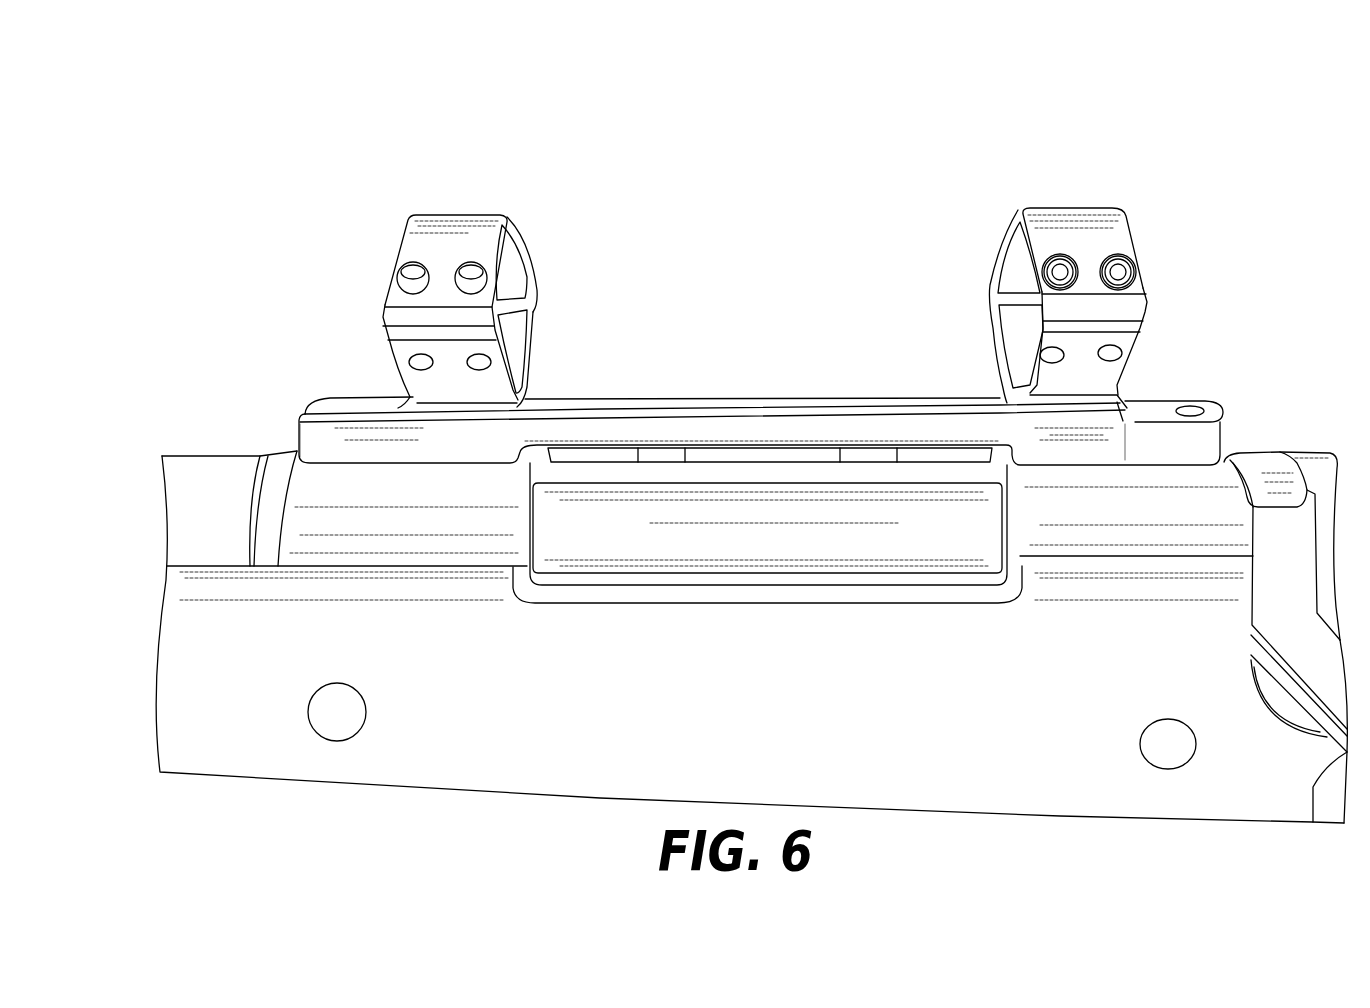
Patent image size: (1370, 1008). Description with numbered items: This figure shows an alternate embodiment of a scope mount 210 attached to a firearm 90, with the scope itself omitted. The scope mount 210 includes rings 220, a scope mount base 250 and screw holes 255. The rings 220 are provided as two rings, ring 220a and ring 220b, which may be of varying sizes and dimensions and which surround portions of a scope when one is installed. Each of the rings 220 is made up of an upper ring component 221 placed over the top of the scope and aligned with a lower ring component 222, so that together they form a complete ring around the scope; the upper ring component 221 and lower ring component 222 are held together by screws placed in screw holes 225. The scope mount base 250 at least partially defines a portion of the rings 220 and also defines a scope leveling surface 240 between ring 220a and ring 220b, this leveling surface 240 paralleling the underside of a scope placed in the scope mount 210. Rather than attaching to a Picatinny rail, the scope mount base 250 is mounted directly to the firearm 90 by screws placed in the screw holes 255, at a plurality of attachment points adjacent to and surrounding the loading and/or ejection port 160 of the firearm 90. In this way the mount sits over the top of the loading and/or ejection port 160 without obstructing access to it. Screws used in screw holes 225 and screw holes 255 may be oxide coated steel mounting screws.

The firearm 90 is at (432, 680).
The loading and/or ejection port 160 is at (765, 540).
The scope mount 210 is at (977, 134).
The rings 220 is at (302, 263).
The ring 220a is at (1042, 280).
The ring 220b is at (500, 277).
The upper ring component 221 is at (520, 262).
The lower ring component 222 is at (532, 353).
The screw holes 225 is at (1045, 267).
The scope leveling surface 240 is at (812, 402).
The scope mount base 250 is at (407, 452).
The screw holes 255 is at (1192, 404).